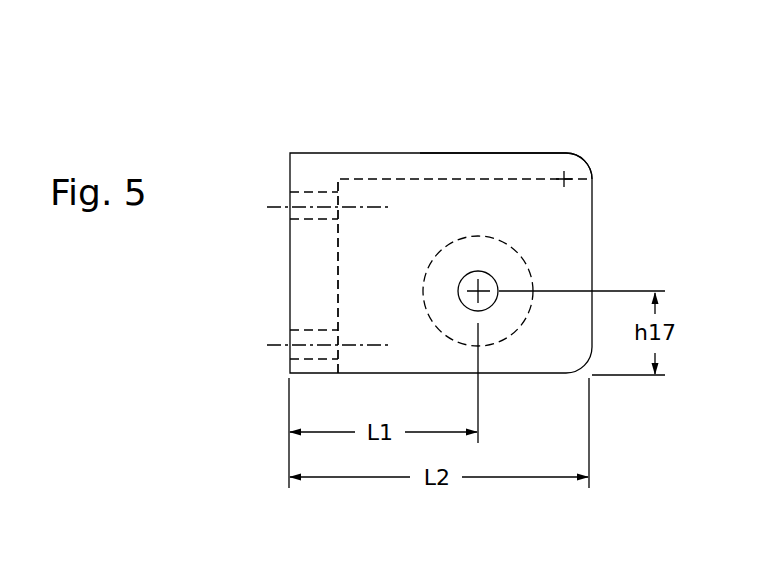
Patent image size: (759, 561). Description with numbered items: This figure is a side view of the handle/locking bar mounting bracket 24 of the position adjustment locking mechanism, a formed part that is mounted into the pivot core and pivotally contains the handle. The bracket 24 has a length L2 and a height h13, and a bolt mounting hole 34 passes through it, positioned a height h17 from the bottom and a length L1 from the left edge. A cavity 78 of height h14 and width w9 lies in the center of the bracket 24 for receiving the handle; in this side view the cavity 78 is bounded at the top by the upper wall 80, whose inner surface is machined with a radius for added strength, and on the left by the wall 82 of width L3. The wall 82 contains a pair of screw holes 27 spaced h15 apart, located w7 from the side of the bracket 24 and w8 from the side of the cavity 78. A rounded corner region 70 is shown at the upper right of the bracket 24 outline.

The bracket 24 is at (320, 125).
The screw holes 27 is at (282, 345).
The bolt mounting hole 34 is at (496, 275).
The rounded corner 70 is at (588, 157).
The cavity 78 is at (406, 193).
The upper wall 80 is at (498, 165).
The wall 82 is at (318, 281).